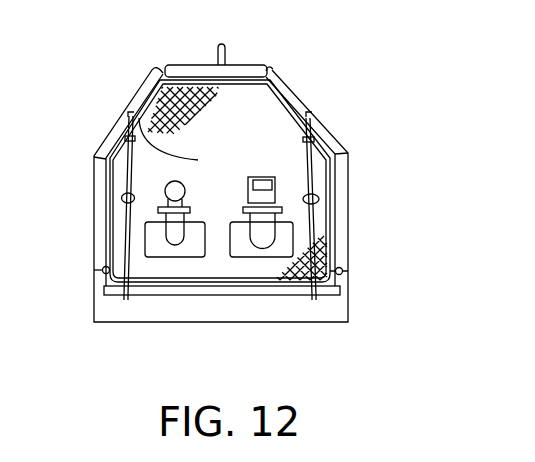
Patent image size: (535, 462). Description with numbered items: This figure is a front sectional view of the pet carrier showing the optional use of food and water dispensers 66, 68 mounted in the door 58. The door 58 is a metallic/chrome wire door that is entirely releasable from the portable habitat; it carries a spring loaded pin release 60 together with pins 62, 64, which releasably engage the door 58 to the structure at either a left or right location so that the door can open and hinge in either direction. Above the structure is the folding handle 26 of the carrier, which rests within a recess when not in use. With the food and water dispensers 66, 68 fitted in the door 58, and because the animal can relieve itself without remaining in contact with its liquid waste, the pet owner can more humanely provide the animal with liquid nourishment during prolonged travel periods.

The folding handle 26 is at (227, 52).
The wire door 58 is at (139, 118).
The spring loaded pin release 60 is at (318, 196).
The pin 62 is at (309, 120).
The pin 64 is at (129, 299).
The food dispenser 66 is at (172, 228).
The water dispenser 68 is at (267, 235).